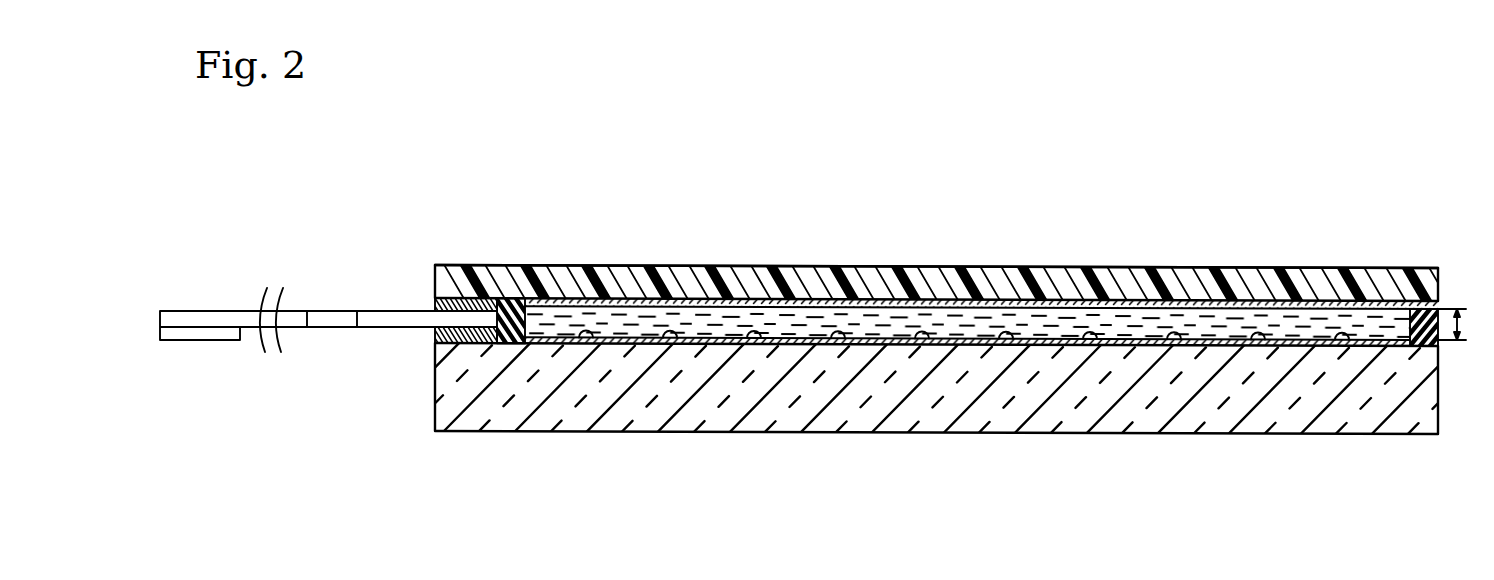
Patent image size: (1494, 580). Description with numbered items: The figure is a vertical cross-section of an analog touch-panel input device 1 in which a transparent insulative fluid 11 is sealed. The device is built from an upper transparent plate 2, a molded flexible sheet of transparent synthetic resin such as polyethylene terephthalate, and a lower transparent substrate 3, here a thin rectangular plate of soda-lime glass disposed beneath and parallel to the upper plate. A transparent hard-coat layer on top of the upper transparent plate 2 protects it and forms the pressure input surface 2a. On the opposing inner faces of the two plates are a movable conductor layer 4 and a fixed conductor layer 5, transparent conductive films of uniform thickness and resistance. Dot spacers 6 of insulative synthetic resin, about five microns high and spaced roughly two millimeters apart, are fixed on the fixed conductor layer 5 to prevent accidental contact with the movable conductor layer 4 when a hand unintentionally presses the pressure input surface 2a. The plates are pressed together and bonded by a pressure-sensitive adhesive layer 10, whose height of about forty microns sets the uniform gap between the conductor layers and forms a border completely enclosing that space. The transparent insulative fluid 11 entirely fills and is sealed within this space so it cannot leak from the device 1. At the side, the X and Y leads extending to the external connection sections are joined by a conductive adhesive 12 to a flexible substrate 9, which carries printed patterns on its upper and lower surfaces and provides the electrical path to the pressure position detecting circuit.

The touch-panel input device 1 is at (973, 203).
The upper transparent plate 2 is at (1268, 288).
The pressure input surface 2a is at (1150, 266).
The lower transparent substrate 3 is at (1285, 395).
The movable conductor layer 4 is at (803, 301).
The fixed conductor layer 5 is at (867, 341).
The dot spacers 6 is at (672, 331).
The flexible substrate 9 is at (213, 318).
The adhesive layer 10 is at (522, 299).
The transparent insulative fluid 11 is at (1043, 326).
The conductive adhesive 12 is at (477, 265).